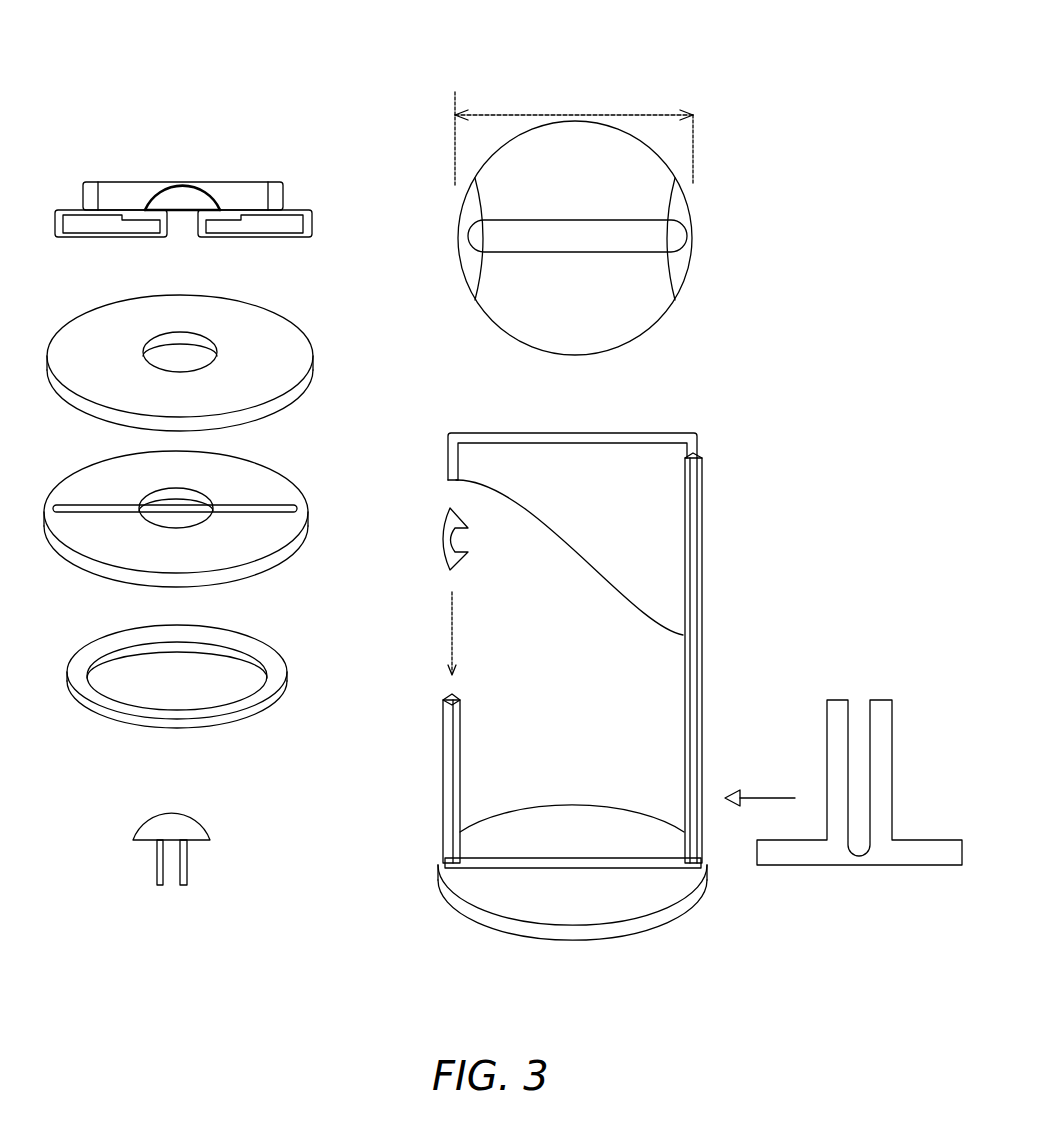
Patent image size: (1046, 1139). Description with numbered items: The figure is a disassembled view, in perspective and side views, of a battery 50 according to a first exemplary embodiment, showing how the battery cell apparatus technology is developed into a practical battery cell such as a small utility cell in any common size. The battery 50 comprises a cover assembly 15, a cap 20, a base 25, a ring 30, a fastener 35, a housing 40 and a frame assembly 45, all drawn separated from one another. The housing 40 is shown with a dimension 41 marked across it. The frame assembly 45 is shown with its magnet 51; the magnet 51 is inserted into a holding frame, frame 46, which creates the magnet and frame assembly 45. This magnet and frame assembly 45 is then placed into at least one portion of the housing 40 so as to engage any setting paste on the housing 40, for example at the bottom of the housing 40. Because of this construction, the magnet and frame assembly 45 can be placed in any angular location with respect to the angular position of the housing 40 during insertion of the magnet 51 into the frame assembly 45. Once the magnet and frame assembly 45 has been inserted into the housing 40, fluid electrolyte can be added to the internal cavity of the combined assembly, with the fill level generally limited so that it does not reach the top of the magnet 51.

The cover assembly 15 is at (325, 181).
The cap 20 is at (323, 333).
The base 25 is at (318, 492).
The ring 30 is at (307, 657).
The fastener 35 is at (230, 827).
The housing 40 is at (737, 207).
The cap width 41 is at (576, 115).
The frame assembly 45 is at (697, 413).
The frame 46 is at (463, 932).
The battery 50 is at (707, 128).
The magnet 51 is at (563, 460).